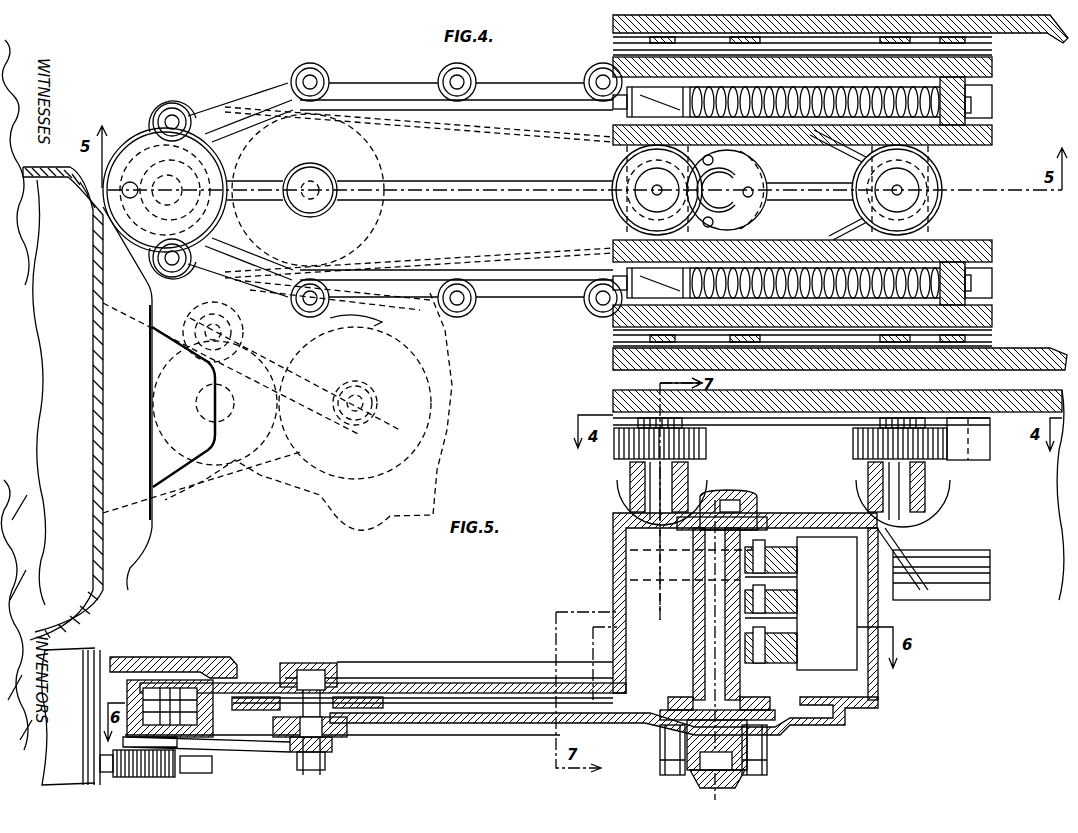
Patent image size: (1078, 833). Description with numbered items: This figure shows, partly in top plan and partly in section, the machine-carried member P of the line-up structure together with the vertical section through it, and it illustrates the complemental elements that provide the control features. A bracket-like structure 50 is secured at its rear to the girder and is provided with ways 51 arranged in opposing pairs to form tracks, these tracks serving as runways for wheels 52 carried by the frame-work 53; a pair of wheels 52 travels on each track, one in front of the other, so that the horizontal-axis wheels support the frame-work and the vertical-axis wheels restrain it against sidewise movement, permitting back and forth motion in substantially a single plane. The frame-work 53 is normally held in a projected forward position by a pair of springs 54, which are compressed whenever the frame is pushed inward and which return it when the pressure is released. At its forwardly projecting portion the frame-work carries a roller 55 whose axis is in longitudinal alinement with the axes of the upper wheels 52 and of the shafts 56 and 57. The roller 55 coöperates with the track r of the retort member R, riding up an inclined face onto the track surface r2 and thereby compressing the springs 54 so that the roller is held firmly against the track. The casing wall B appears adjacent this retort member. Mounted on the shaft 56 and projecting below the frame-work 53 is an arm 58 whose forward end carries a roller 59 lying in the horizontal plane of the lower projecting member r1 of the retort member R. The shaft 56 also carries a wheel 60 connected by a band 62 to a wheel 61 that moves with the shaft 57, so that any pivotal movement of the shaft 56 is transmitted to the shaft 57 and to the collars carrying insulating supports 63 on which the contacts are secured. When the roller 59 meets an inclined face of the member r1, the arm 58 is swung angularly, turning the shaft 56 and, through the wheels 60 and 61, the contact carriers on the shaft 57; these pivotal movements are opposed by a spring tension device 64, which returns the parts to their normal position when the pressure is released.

In FIG. 4, the bracket-like structure 50 is at (1053, 34).
In FIG. 5, the bracket-like structure 50 is at (838, 495).
In FIG. 4, the ways 51 is at (992, 64).
In FIG. 5, the ways 51 is at (983, 453).
In FIG. 4, the wheels 52 is at (612, 42).
In FIG. 5, the wheels 52 is at (706, 441).
In FIG. 5, the frame-work 53 is at (613, 567).
In FIG. 4, the springs 54 is at (830, 113).
In FIG. 4, the roller 55 is at (187, 134).
In FIG. 5, the roller 55 is at (220, 658).
In FIG. 5, the shaft 56 is at (333, 751).
In FIG. 5, the shaft 57 is at (705, 664).
In FIG. 4, the arm 58 is at (262, 176).
In FIG. 5, the arm 58 is at (274, 753).
In FIG. 4, the roller 59 is at (150, 169).
In FIG. 5, the roller 59 is at (110, 763).
In FIG. 4, the wheel 60 is at (383, 176).
In FIG. 5, the wheel 60 is at (350, 698).
In FIG. 4, the wheel 61 is at (759, 217).
In FIG. 5, the wheel 61 is at (752, 705).
In FIG. 4, the band 62 is at (488, 130).
In FIG. 5, the band 62 is at (508, 718).
In FIG. 5, the insulating supports 63 is at (797, 565).
In FIG. 5, the spring tension device 64 is at (672, 737).
In FIG. 4, the member carried by the machine P is at (529, 87).
In FIG. 5, the member carried by the machine P is at (383, 663).
In FIG. 4, the casing B is at (92, 392).
In FIG. 5, the casing B is at (40, 711).
In FIG. 4, the retort member R is at (152, 518).
In FIG. 4, the track r is at (130, 566).
In FIG. 5, the track r is at (101, 663).
In FIG. 4, the lower projecting member r1 is at (183, 470).
In FIG. 5, the lower projecting member r1 is at (196, 765).
In FIG. 4, the track surface r2 is at (150, 361).